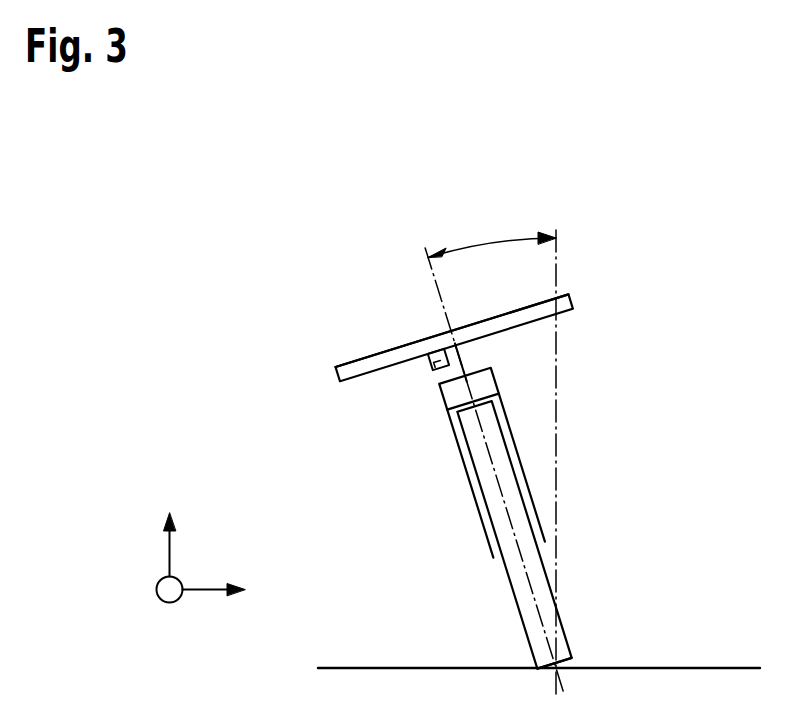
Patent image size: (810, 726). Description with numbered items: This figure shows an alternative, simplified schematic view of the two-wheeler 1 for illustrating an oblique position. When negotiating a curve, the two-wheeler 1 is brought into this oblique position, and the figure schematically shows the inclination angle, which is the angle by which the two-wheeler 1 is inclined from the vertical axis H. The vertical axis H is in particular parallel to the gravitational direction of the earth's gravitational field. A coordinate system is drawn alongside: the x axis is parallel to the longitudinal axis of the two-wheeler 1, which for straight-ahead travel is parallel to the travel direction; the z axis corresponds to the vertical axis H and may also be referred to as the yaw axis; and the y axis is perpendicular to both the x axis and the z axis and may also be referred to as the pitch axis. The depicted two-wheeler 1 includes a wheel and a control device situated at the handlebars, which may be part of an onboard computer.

The two-wheeler 1 is at (587, 448).
The vertical axis H is at (557, 263).
The x axis x is at (157, 602).
The y axis y is at (198, 590).
The z axis z is at (167, 545).